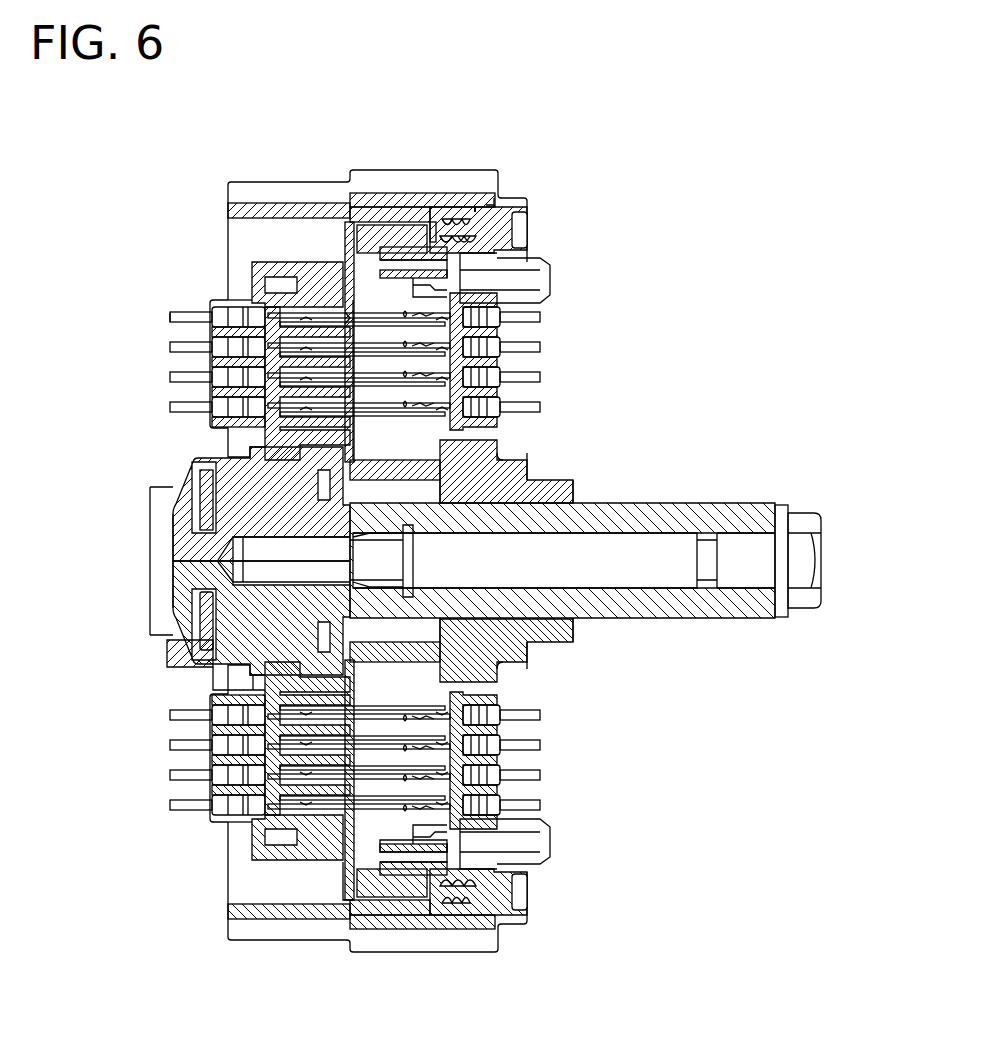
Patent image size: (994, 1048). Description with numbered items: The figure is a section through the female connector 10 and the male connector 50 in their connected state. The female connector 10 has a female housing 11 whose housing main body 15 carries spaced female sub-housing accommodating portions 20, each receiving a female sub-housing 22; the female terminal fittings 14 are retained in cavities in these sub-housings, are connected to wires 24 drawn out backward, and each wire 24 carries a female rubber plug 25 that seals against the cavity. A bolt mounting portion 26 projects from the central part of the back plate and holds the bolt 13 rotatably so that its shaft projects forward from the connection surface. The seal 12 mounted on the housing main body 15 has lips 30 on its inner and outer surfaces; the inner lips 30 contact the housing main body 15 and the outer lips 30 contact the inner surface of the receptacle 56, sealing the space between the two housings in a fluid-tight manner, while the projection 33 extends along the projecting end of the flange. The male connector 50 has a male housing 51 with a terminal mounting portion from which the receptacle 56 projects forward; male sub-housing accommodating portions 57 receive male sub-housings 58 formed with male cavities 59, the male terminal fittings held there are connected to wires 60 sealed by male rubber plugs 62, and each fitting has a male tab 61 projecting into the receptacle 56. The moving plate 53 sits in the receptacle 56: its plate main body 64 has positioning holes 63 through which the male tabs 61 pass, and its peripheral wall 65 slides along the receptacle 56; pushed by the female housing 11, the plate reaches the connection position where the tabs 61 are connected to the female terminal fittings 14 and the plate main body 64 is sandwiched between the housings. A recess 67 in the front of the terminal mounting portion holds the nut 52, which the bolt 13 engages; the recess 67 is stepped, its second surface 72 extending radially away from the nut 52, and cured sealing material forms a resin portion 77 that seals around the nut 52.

The female connector 10 is at (640, 340).
The female housing 11 is at (522, 230).
The seal 12 is at (438, 232).
The bolt 13 is at (683, 550).
The female terminal fittings 14 is at (372, 408).
The housing main body 15 is at (397, 247).
The female sub-housing accommodating portions 20 is at (449, 282).
The female sub-housing 22 is at (449, 433).
The wires 24 is at (536, 409).
The female rubber plug 25 is at (499, 321).
The bolt mounting portion 26 is at (641, 510).
The lips 30 is at (464, 242).
The projection 33 is at (502, 208).
The male connector 50 is at (152, 347).
The male housing 51 is at (228, 231).
The nut 52 is at (172, 540).
The moving plate 53 is at (348, 908).
The receptacle 56 is at (474, 212).
The male sub-housing accommodating portions 57 is at (254, 282).
The male sub-housings 58 is at (265, 441).
The male cavities 59 is at (212, 318).
The wires 60 is at (175, 409).
The male tab 61 is at (357, 805).
The male rubber plug 62 is at (175, 379).
The positioning holes 63 is at (350, 320).
The plate main body 64 is at (345, 878).
The peripheral wall 65 is at (410, 858).
The recess 67 is at (244, 505).
The second surface 72 is at (329, 650).
The resin portion 77 is at (331, 632).